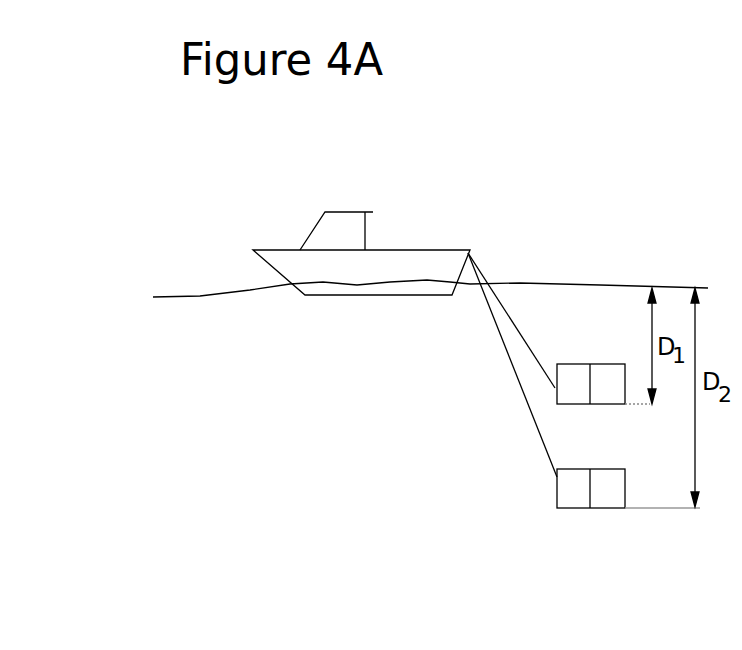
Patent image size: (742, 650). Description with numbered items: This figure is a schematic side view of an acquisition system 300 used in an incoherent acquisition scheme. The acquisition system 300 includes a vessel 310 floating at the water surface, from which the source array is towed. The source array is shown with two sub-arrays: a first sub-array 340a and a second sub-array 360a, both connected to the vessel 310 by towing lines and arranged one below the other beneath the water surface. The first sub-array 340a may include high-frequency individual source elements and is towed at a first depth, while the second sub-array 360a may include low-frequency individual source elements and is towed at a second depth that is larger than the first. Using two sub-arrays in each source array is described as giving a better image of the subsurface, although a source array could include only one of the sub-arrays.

The acquisition system 300 is at (437, 127).
The vessel 310 is at (365, 232).
The first sub-array 340a is at (565, 364).
The second sub-array 360a is at (572, 469).